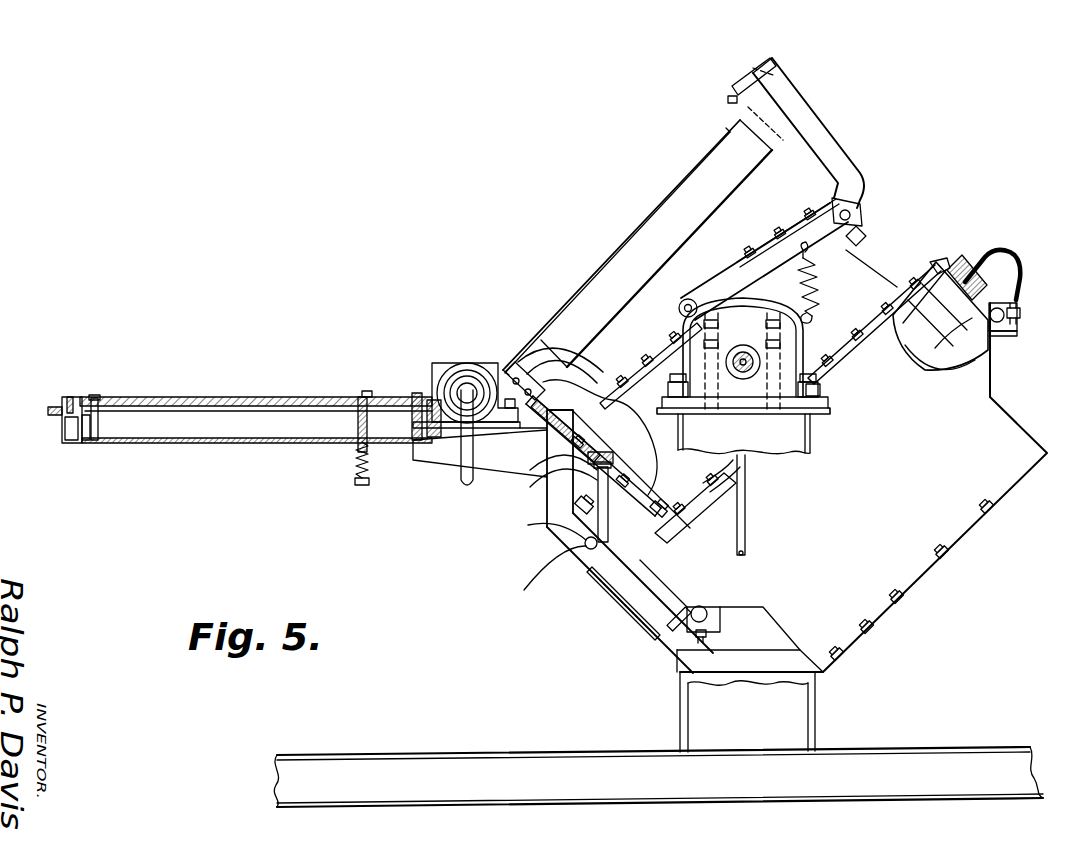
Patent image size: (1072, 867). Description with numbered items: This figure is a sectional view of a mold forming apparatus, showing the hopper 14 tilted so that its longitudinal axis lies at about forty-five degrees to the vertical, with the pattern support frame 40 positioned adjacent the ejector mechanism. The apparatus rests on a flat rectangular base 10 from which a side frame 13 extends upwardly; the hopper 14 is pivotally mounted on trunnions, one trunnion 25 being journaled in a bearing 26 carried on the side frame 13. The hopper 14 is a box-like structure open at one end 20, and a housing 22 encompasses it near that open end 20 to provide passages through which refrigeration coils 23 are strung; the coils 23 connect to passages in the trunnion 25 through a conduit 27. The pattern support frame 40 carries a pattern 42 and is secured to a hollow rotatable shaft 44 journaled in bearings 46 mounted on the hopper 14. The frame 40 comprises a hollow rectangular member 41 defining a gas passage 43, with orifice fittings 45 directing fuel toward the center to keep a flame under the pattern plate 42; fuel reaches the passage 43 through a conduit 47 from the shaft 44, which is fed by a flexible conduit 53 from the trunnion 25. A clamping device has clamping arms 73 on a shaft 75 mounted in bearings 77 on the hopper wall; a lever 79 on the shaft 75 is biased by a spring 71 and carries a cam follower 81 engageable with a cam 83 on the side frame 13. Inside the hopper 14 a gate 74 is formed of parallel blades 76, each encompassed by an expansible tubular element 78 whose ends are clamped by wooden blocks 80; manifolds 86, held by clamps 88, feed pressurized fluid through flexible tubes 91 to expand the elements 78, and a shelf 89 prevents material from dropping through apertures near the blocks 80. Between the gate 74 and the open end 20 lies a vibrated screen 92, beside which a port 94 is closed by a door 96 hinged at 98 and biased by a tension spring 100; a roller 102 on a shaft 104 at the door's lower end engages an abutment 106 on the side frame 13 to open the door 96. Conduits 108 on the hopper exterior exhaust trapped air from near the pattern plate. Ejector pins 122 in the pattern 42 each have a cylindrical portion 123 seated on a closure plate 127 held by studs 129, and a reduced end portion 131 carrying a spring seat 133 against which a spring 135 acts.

The base 10 is at (537, 757).
The side frame 13 is at (800, 714).
The hopper 14 is at (900, 588).
The open end 20 is at (618, 236).
The housing 22 is at (585, 280).
The refrigeration coils 23 is at (527, 335).
The trunnion 25 is at (750, 375).
The bearing 26 is at (830, 406).
The conduit 27 is at (746, 528).
The pattern support frame 40 is at (243, 453).
The rectangular member 41 is at (62, 428).
The pattern 42 is at (308, 390).
The gas passage 43 is at (66, 445).
The hollow rotatable shaft 44 is at (462, 363).
The orifice fitting 45 is at (95, 395).
The bearing 46 is at (468, 372).
The conduit 47 is at (458, 462).
The flexible conduit 53 is at (697, 508).
The spring 71 is at (816, 288).
The clamping arm 73 is at (795, 86).
The gate 74 is at (912, 335).
The shaft 75 is at (862, 208).
The blade 76 is at (932, 360).
The bearing 77 is at (868, 228).
The expansible tubular element 78 is at (962, 372).
The lever 79 is at (735, 277).
The wooden block 80 is at (968, 268).
The cam follower 81 is at (690, 298).
The cam 83 is at (665, 345).
The manifold 86 is at (1005, 336).
The clamp 88 is at (1020, 325).
The shelf 89 is at (930, 258).
The flexible tube 91 is at (1012, 265).
The screen 92 is at (660, 498).
The port 94 is at (650, 515).
The door 96 is at (615, 545).
The hinge 98 is at (560, 490).
The tension spring 100 is at (592, 462).
The roller 102 is at (583, 562).
The shaft 104 is at (586, 543).
The abutment 106 is at (596, 508).
The conduit 108 is at (616, 598).
The ejector pin 122 is at (347, 460).
The cylindrical portion 123 is at (369, 391).
The closure plate 127 is at (192, 444).
The stud 129 is at (92, 441).
The reduced end portion 131 is at (372, 470).
The spring seat 133 is at (352, 490).
The spring 135 is at (356, 433).